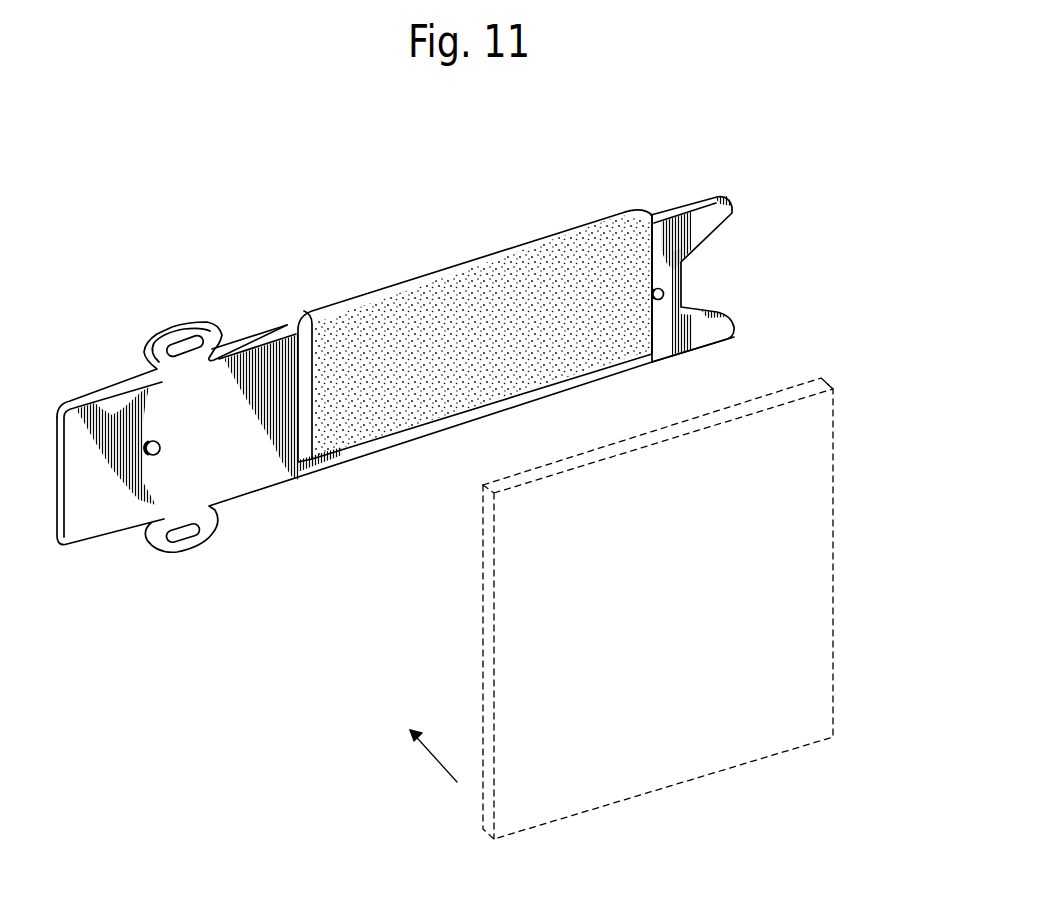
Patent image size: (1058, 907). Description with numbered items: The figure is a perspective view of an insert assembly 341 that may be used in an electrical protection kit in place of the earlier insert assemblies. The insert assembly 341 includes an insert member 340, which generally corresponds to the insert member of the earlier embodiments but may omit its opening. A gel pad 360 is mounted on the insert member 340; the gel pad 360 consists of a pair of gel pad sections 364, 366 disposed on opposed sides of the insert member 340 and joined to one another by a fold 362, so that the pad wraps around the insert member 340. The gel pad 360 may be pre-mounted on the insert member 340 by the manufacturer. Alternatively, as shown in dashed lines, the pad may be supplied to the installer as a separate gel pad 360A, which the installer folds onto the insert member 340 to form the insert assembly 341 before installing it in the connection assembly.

The insert member 340 is at (657, 208).
The insert assembly 341 is at (568, 183).
The gel pad 360 is at (290, 414).
The gel pad 360A is at (840, 667).
The fold 362 is at (538, 232).
The gel pad section 364 is at (432, 382).
The gel pad section 366 is at (280, 320).